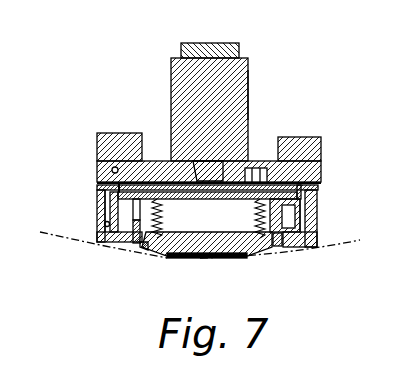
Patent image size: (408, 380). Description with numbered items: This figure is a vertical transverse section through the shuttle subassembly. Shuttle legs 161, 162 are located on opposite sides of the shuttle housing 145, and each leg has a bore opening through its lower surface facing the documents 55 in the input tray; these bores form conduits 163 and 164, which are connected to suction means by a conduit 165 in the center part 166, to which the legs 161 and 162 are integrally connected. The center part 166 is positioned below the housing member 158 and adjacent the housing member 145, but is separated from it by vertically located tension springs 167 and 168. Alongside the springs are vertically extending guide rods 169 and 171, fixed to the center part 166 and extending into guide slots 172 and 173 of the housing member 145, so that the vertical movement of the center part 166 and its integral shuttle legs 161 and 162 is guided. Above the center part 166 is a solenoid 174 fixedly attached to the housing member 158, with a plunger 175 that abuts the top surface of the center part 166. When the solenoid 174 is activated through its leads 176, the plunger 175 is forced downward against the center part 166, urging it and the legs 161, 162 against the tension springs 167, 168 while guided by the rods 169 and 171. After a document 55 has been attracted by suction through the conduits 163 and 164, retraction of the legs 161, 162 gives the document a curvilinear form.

The solenoid 174 is at (171, 99).
The leads 176 is at (248, 92).
The plunger 175 is at (176, 148).
The center part 166 is at (284, 160).
The conduit 165 is at (319, 172).
The housing member 158 is at (254, 166).
The shuttle leg 161 is at (100, 185).
The shuttle leg 162 is at (320, 190).
The conduit 163 is at (98, 217).
The conduit 164 is at (312, 218).
The guide rod 169 is at (99, 240).
The guide slot 172 is at (132, 243).
The tension spring 167 is at (143, 246).
The shuttle housing 145 is at (190, 257).
The tension spring 168 is at (250, 250).
The guide slot 173 is at (273, 247).
The guide rod 171 is at (280, 246).
The documents 55 is at (322, 250).